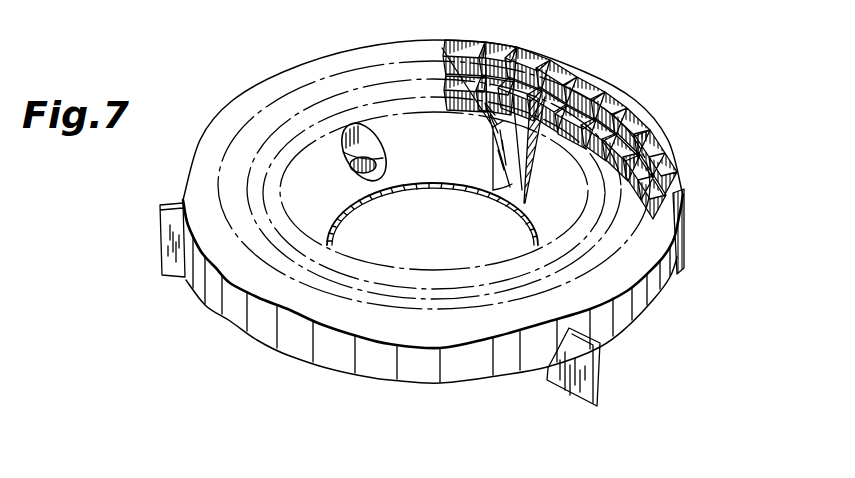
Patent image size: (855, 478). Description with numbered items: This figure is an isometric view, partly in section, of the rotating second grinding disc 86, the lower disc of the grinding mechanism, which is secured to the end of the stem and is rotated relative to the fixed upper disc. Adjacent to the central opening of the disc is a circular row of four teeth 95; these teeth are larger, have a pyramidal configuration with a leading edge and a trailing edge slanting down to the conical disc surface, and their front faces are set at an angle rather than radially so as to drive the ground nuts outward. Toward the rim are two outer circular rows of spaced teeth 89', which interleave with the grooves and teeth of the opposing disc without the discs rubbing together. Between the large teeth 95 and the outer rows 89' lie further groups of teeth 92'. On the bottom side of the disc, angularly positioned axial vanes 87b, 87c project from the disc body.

The second grinding disc 86 is at (657, 122).
The outer circular rows of spaced teeth 89' is at (682, 174).
The group of teeth 92' is at (470, 119).
The circular row of four teeth 95 is at (507, 185).
The axial vane 87b is at (160, 246).
The axial vane 87c is at (600, 377).